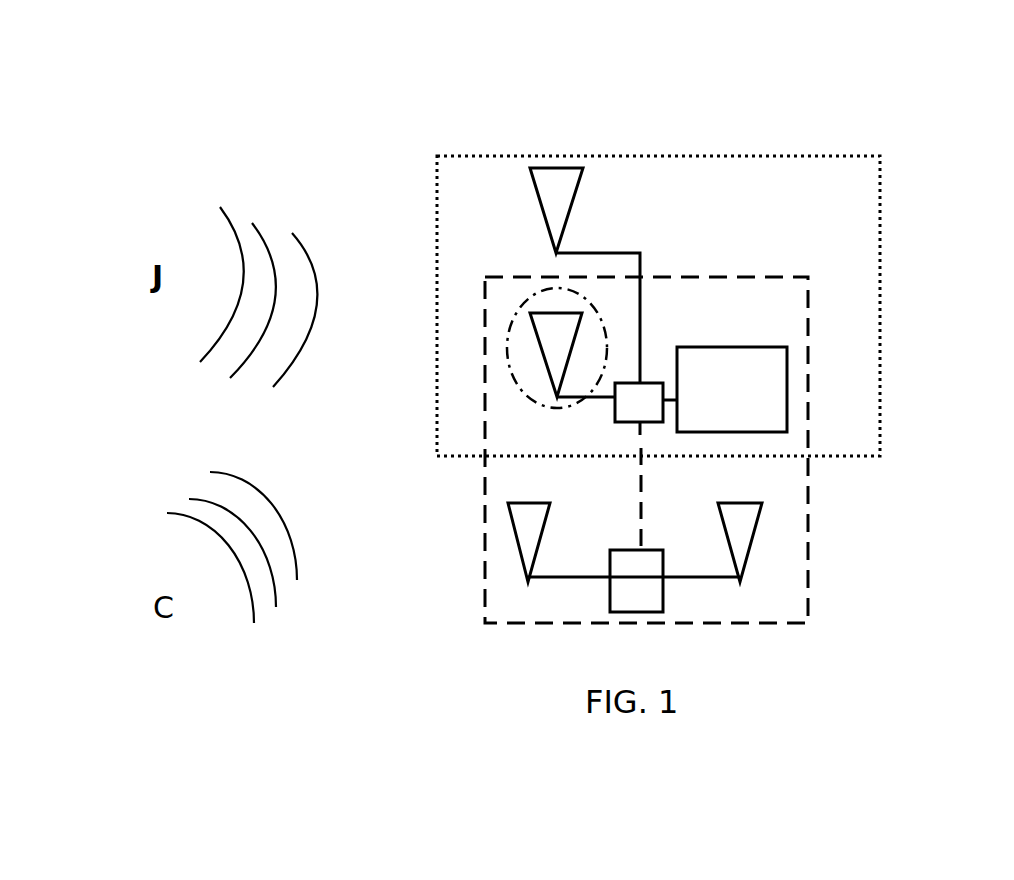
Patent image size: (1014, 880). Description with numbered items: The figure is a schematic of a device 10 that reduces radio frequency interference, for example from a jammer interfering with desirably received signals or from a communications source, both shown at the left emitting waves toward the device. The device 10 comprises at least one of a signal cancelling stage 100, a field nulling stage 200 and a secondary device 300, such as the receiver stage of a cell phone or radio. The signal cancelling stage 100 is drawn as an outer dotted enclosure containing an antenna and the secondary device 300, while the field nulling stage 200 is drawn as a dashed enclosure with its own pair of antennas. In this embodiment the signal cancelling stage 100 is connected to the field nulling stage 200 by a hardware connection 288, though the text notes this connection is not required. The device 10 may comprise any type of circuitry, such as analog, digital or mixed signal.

The device 10 is at (689, 76).
The signal cancelling stage 100 is at (852, 258).
The field nulling stage 200 is at (787, 540).
The hardware connection 288 is at (652, 479).
The secondary device 300 is at (755, 383).